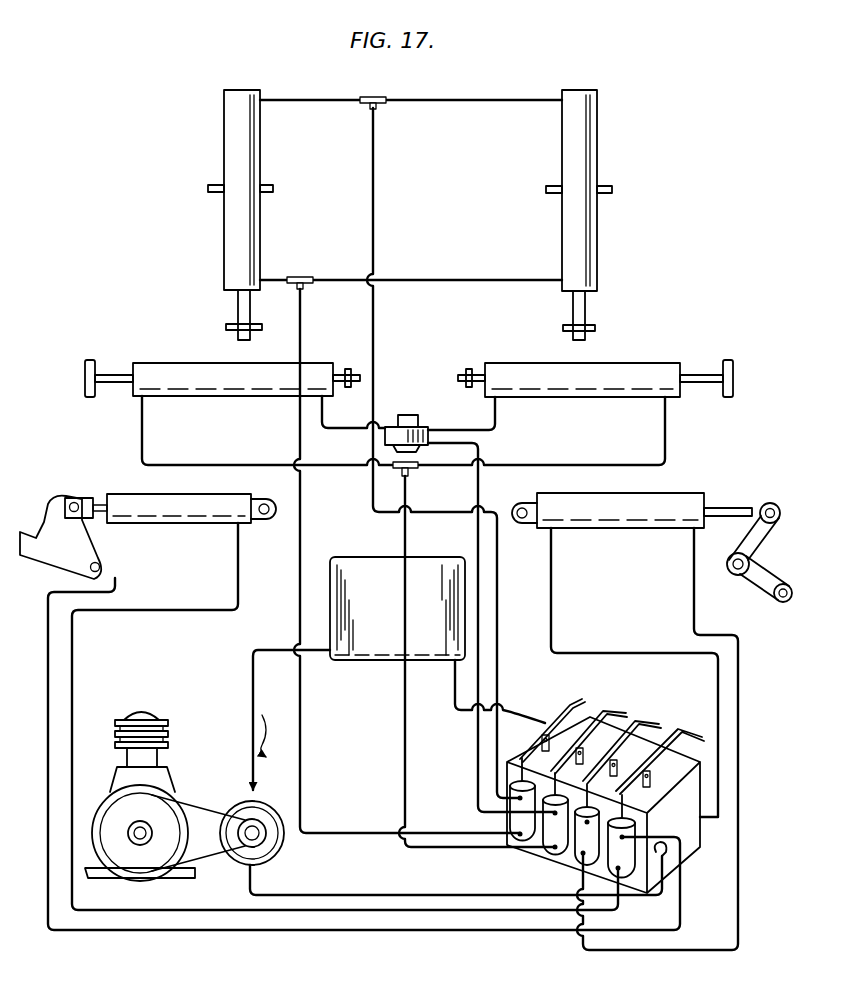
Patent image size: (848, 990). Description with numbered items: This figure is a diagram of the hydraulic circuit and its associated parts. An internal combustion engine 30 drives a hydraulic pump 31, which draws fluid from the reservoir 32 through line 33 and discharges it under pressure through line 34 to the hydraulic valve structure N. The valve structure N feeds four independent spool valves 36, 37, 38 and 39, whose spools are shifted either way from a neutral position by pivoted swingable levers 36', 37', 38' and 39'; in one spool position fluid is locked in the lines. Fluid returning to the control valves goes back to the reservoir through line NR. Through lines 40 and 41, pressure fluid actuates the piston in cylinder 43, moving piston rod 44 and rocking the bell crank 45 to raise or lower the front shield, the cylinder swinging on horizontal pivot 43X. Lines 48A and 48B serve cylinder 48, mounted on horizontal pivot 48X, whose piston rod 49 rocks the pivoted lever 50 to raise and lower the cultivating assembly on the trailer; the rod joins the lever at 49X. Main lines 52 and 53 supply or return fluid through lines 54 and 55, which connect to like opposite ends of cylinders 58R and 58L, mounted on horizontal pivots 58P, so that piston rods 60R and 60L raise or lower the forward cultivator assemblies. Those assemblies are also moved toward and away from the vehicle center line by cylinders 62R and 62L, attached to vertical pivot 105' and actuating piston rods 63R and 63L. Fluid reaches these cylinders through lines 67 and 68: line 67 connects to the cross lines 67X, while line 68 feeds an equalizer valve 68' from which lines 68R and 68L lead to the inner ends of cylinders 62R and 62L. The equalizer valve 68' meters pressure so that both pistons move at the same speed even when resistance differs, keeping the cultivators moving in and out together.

The line 55 is at (480, 100).
The cylinder 58R is at (260, 140).
The cylinder 58L is at (548, 190).
The horizontal pivot 58P is at (275, 190).
The main line 53 is at (373, 188).
The line 54 is at (436, 280).
The main line 52 is at (300, 327).
The piston rod 60R is at (236, 331).
The piston rod 60L is at (585, 310).
The vertical pivot 105' is at (408, 354).
The equalizer valve 68' is at (407, 417).
The piston rod 63R is at (115, 390).
The cylinder 62R is at (220, 396).
The cylinder 62L is at (578, 396).
The piston rod 63L is at (710, 385).
The line 68R is at (358, 450).
The line 68L is at (495, 415).
The cross lines 67X is at (192, 448).
The piston rod 49 is at (98, 502).
The piston rod 44 is at (730, 508).
The cylinder 48 is at (162, 525).
The pivot pin 49X is at (74, 512).
The horizontal pivot 48X is at (263, 520).
The pivoted lever 50 is at (52, 562).
The horizontal pivot 43X is at (522, 522).
The cylinder 43 is at (650, 530).
The bell crank 45 is at (742, 576).
The reservoir 32 is at (397, 608).
The line 68 is at (493, 629).
The line 48B is at (72, 638).
The line 48A is at (48, 672).
The line 33 is at (253, 705).
The line NR is at (455, 684).
The pivoted swingable lever 36' is at (556, 717).
The pivoted swingable lever 37' is at (593, 727).
The pivoted swingable lever 38' is at (630, 738).
The pivoted swingable lever 39' is at (664, 749).
The line 40 is at (718, 682).
The line 41 is at (738, 678).
The internal combustion engine 30 is at (172, 792).
The line 67 is at (405, 730).
The spool valve 36 is at (486, 799).
The hydraulic pump 31 is at (238, 868).
The line 34 is at (438, 885).
The spool valve 37 is at (527, 823).
The spool valve 38 is at (559, 835).
The spool valve 39 is at (591, 846).
The hydraulic valve structure N is at (706, 836).